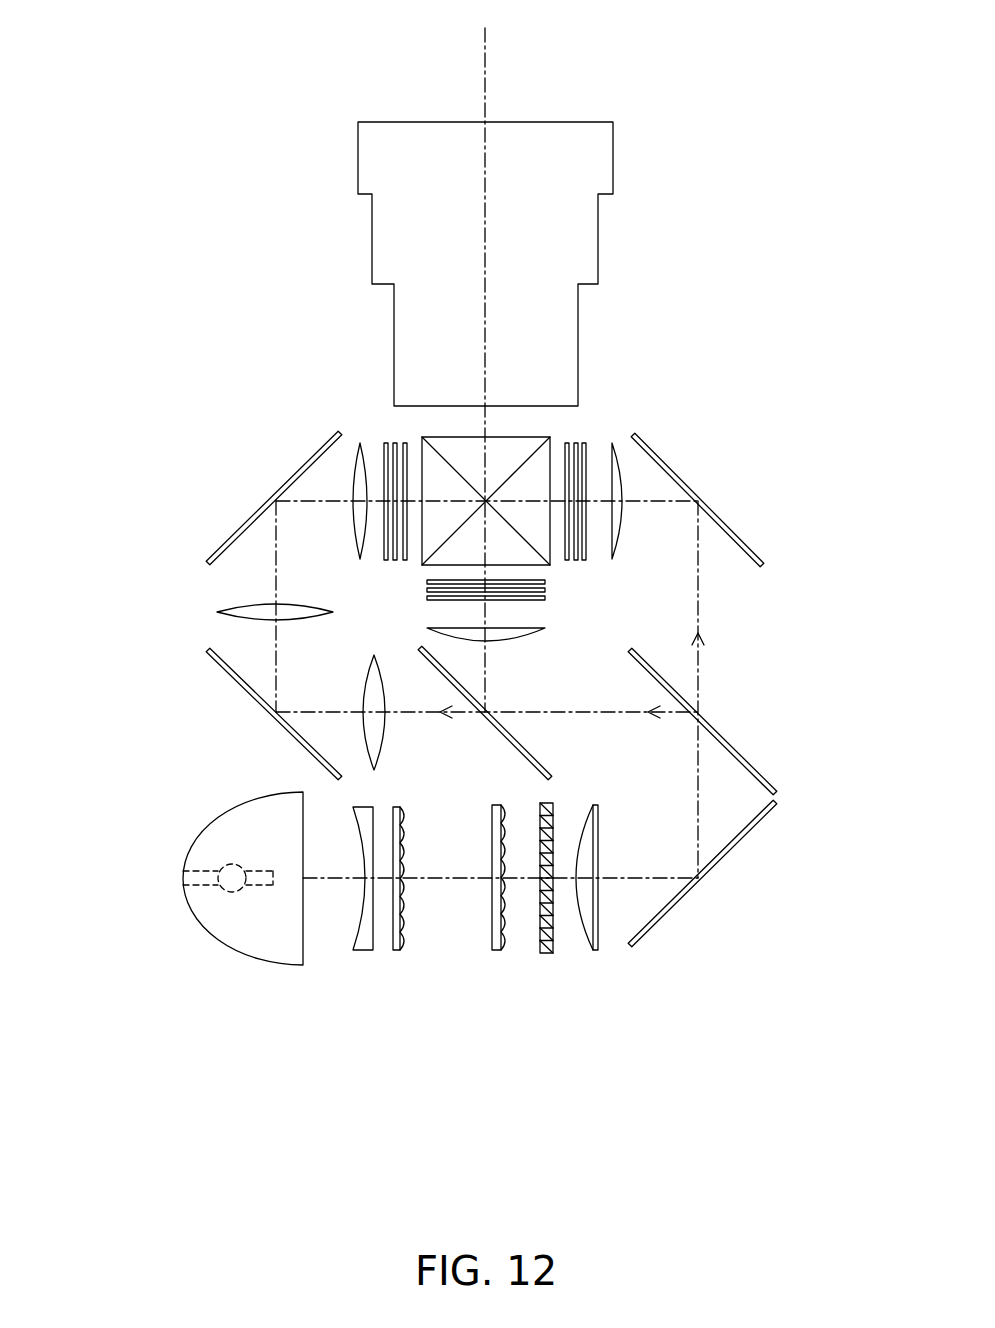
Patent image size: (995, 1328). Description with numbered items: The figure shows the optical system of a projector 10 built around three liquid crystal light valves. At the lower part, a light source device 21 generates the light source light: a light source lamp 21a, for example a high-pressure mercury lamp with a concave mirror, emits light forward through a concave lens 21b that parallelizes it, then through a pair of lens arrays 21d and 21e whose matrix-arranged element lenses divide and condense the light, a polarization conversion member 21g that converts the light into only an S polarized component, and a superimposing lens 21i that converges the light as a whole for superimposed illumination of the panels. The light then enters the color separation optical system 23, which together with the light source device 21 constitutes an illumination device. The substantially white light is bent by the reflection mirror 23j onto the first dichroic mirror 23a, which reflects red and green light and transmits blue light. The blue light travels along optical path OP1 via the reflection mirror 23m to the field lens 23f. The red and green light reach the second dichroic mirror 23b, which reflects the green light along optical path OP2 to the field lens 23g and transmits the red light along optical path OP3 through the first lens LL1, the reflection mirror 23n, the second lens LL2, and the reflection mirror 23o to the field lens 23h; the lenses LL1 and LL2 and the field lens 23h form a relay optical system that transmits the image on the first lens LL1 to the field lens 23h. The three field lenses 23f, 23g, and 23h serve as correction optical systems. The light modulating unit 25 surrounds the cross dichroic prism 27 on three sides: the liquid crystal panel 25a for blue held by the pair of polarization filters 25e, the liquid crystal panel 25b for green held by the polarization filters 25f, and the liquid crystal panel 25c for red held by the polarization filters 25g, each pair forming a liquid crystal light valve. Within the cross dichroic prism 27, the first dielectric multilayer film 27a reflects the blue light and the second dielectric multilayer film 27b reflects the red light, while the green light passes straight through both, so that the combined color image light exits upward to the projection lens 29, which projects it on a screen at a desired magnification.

The projector 10 is at (884, 50).
The projection lens 29 is at (553, 220).
The cross dichroic prism 27 is at (480, 440).
The first dielectric multilayer film 27a is at (430, 442).
The second dielectric multilayer film 27b is at (548, 440).
The light modulating unit 25 is at (494, 507).
The liquid crystal panel for blue light 25a is at (586, 533).
The liquid crystal panel for green light 25b is at (545, 590).
The liquid crystal panel for red light 25c is at (384, 470).
The pair of polarization filters 25e is at (578, 561).
The pair of polarization filters 25f is at (427, 598).
The pair of polarization filters 25g is at (403, 561).
The color separation optical system 23 is at (474, 709).
The first dichroic mirror 23a is at (738, 752).
The second dichroic mirror 23b is at (540, 762).
The field lens 23f is at (620, 492).
The field lens 23g is at (545, 633).
The field lens 23h is at (350, 517).
The reflection mirror 23j is at (668, 910).
The reflection mirror 23m is at (755, 548).
The reflection mirror 23n is at (245, 688).
The reflection mirror 23o is at (228, 535).
The first lens LL1 is at (382, 748).
The second lens LL2 is at (217, 614).
The optical path (blue light) OP1 is at (698, 598).
The optical path (green light) OP2 is at (490, 662).
The optical path (red light) OP3 is at (275, 583).
The light source device 21 is at (412, 960).
The light source lamp 21a is at (257, 950).
The concave lens 21b is at (360, 952).
The lens array 21d is at (397, 952).
The lens array 21e is at (497, 953).
The polarization conversion member 21g is at (550, 953).
The superimposing lens 21i is at (593, 953).